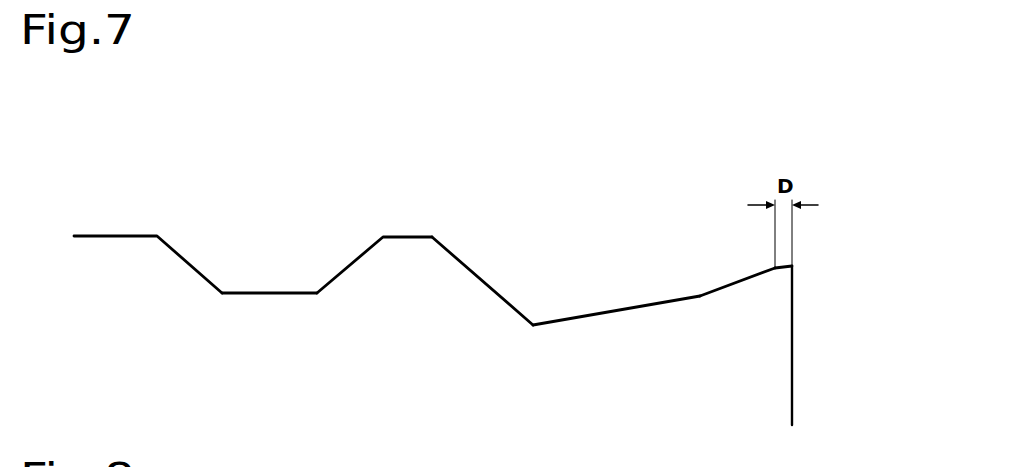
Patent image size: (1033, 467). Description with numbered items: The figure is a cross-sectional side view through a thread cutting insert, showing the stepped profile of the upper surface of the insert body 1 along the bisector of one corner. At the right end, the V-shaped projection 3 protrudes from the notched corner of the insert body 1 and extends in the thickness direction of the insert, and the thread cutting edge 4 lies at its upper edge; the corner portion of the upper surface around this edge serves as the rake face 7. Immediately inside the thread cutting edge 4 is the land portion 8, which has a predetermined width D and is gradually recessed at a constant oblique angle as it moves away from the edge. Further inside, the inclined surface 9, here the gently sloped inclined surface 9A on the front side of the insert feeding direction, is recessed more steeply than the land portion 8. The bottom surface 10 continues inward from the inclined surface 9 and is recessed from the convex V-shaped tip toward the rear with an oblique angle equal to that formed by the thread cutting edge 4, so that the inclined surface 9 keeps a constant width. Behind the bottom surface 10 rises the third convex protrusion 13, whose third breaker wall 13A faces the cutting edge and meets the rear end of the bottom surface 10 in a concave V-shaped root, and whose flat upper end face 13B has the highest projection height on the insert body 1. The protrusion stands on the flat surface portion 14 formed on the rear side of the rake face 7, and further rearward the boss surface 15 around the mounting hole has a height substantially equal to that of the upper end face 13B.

The insert body 1 is at (353, 382).
The V-shaped projection 3 is at (816, 342).
The thread cutting edge 4 is at (793, 267).
The rake face 7 is at (645, 165).
The land portion 8 is at (782, 266).
The inclined surface 9 is at (743, 278).
The inclined surface 9A is at (724, 226).
The bottom surface 10 is at (633, 306).
The third convex protrusion 13 is at (425, 212).
The third breaker wall 13A is at (468, 268).
The upper end face 13B is at (405, 237).
The flat surface portion 14 is at (270, 293).
The boss surface 15 is at (114, 236).